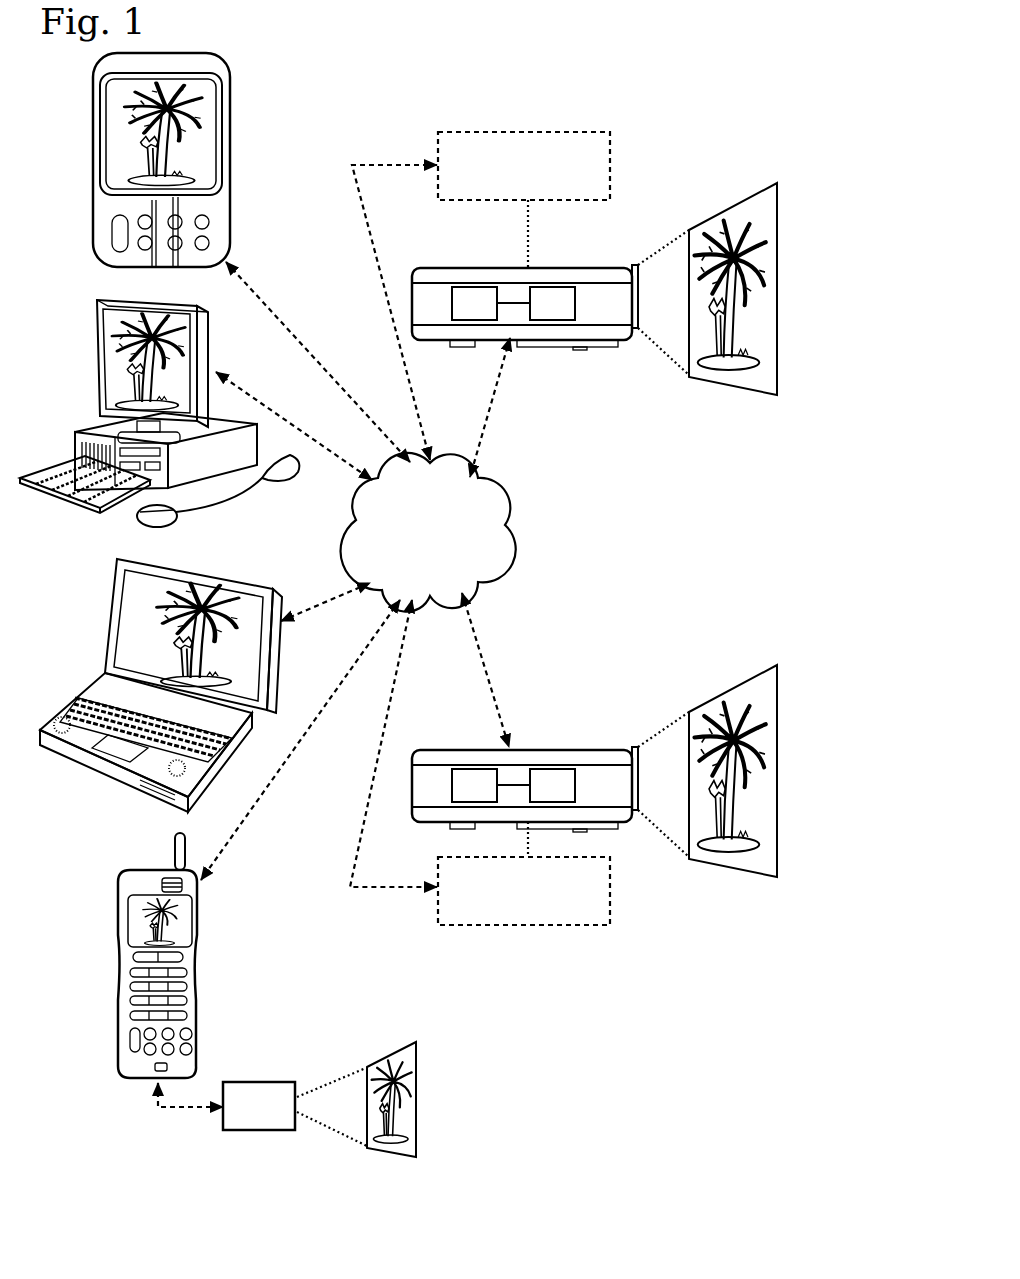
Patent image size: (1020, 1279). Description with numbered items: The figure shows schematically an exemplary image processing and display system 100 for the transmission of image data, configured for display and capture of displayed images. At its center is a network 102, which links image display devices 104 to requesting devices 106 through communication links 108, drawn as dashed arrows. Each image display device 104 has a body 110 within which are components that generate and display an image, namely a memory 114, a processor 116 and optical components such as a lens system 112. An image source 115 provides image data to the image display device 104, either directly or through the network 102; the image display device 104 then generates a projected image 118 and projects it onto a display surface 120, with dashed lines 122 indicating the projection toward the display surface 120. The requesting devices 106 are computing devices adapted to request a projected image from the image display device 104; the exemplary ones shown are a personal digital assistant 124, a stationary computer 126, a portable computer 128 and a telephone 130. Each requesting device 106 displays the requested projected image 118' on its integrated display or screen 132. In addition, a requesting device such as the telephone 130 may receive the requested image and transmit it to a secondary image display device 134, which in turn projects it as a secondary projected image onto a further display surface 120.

The image processing and display system 100 is at (606, 64).
The network 102 is at (412, 553).
The image display device 104 is at (510, 528).
The requesting device 106 is at (181, 565).
The communication link 108 is at (382, 163).
The body 110 is at (425, 293).
The lens system 112 is at (637, 265).
The memory 114 is at (540, 314).
The image source 115 is at (555, 130).
The processor 116 is at (462, 314).
The projected image 118 is at (729, 559).
The requested projected image 118' is at (183, 484).
The display surface 120 is at (757, 192).
The dashed lines 122 is at (660, 252).
The personal digital assistant 124 is at (233, 221).
The stationary computer 126 is at (73, 442).
The portable computer 128 is at (98, 765).
The telephone 130 is at (200, 1052).
The display 132 is at (115, 137).
The secondary image display device 134 is at (240, 1116).